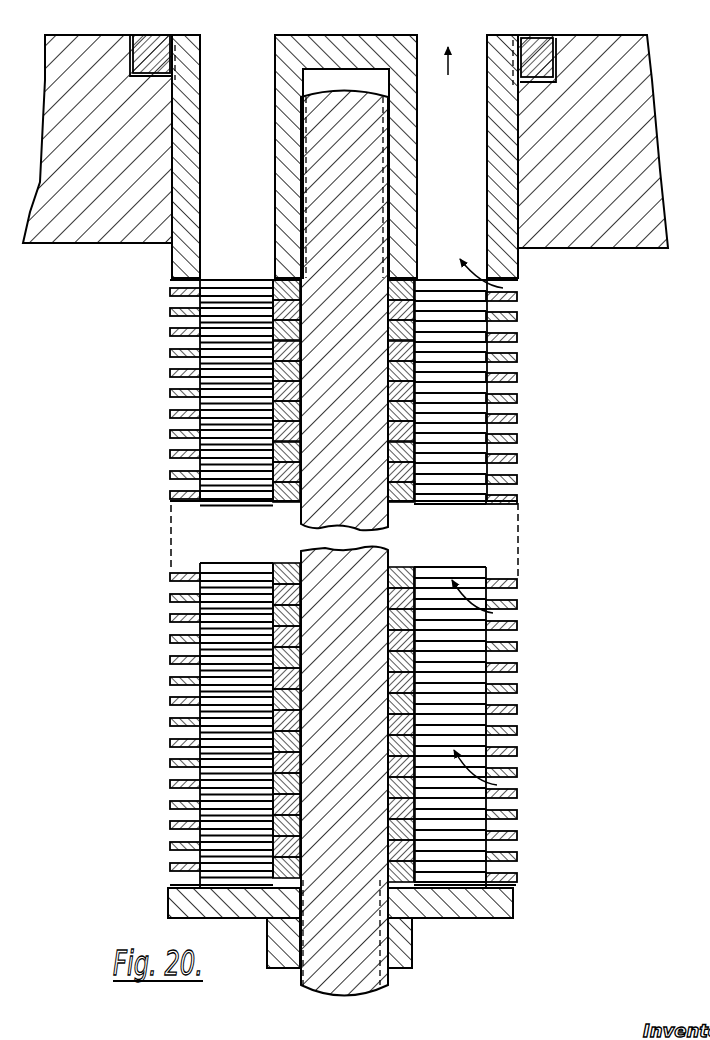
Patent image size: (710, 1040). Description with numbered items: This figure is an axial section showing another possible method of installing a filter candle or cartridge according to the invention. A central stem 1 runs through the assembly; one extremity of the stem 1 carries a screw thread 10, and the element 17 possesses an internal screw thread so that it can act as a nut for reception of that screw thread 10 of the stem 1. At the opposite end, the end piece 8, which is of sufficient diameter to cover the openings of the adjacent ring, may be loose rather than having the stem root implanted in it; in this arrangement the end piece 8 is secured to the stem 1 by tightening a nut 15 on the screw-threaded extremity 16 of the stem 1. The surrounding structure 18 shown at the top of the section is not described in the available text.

The stem 1 is at (386, 524).
The end piece 8 is at (232, 905).
The screw thread 10 is at (310, 228).
The nut 15 is at (272, 953).
The screw-threaded extremity 16 is at (363, 958).
The element 17 is at (247, 205).
The housing block 18 is at (573, 232).